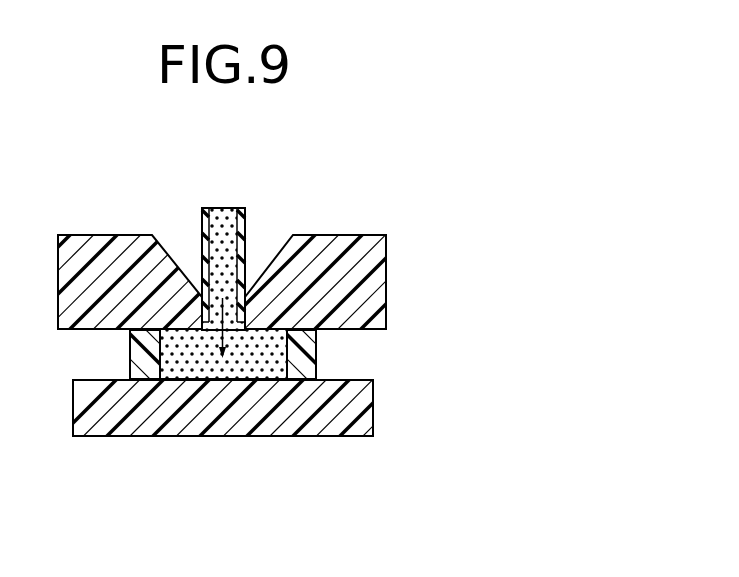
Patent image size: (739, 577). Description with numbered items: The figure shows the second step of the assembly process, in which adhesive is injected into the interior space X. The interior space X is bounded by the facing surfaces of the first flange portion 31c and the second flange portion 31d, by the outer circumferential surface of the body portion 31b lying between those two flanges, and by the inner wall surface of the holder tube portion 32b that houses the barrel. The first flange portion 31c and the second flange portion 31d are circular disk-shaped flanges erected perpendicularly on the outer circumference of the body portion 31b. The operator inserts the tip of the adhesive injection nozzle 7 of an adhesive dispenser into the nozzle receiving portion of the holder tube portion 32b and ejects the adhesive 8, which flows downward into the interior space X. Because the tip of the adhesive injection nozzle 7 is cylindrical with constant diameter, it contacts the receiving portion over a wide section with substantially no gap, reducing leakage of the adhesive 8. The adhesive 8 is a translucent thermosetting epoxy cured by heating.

The adhesive injection nozzle 7 is at (241, 228).
The adhesive 8 is at (227, 217).
The holder tube portion 32b is at (375, 275).
The body portion 31b is at (363, 420).
The first flange portion 31c is at (138, 353).
The second flange portion 31d is at (308, 353).
The interior space X is at (177, 365).